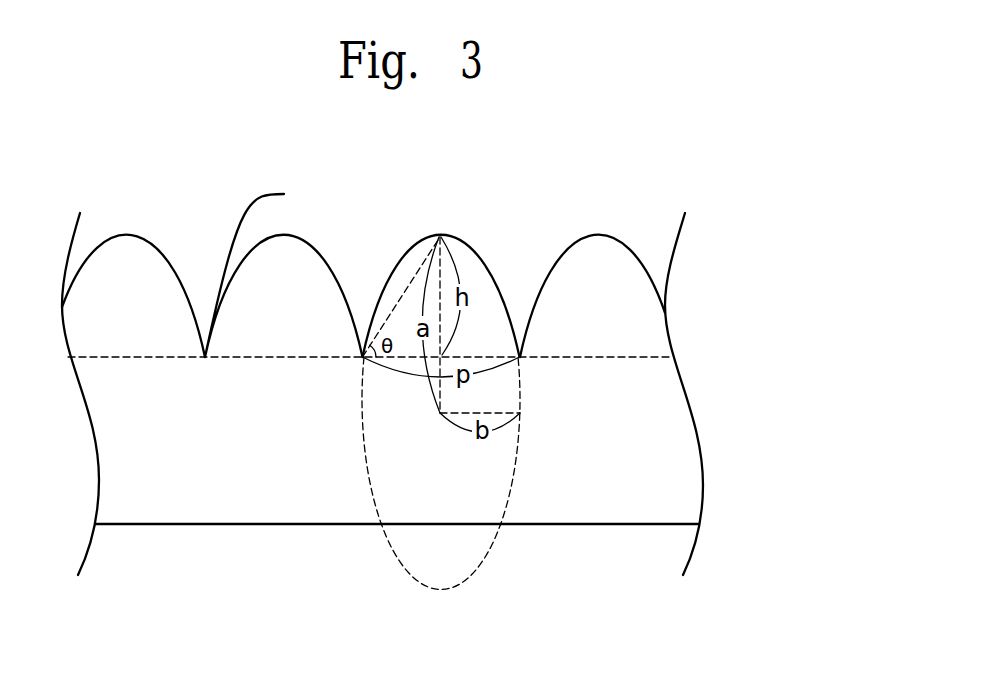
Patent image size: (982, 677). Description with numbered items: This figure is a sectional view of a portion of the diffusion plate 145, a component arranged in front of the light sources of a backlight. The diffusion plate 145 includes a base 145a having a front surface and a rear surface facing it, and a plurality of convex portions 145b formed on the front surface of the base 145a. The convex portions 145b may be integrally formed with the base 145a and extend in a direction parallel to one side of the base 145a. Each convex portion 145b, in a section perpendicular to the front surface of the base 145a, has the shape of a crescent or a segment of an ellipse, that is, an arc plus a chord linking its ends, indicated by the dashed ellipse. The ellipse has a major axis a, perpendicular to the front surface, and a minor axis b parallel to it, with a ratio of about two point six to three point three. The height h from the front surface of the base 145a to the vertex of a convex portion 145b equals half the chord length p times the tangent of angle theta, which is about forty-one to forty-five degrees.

The diffusion plate 145 is at (466, 384).
The base 145a is at (450, 474).
The convex portions 145b is at (647, 320).